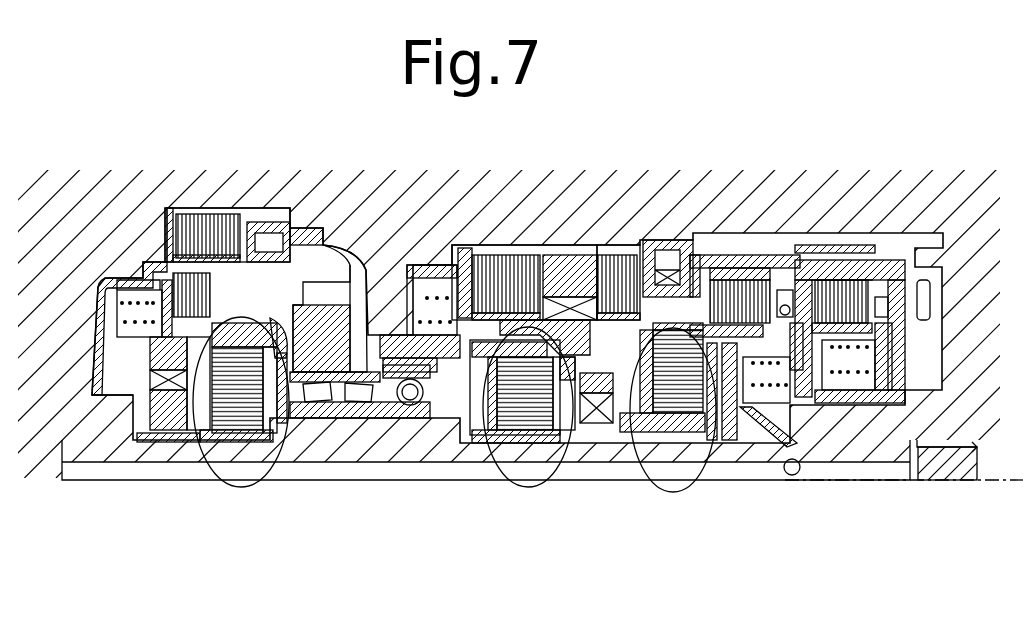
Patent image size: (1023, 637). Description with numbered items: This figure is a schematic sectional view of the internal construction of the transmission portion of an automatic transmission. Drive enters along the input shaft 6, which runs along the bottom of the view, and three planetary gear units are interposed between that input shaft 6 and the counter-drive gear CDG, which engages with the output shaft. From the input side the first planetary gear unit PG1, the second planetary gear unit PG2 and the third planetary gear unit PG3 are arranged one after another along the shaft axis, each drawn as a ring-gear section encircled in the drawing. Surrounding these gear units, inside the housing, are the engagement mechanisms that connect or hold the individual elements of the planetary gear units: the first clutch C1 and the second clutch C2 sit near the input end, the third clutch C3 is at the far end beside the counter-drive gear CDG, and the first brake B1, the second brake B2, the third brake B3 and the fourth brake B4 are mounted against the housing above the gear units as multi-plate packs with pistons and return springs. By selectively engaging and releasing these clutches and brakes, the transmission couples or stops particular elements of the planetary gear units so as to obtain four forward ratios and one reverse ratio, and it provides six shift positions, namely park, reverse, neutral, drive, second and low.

The input shaft 6 is at (913, 453).
The third clutch C3 is at (158, 253).
The fourth brake B4 is at (200, 258).
The counter-drive gear CDG is at (345, 285).
The third brake B3 is at (478, 243).
The second brake B2 is at (617, 243).
The first clutch C1 is at (723, 270).
The first brake B1 is at (817, 262).
The second clutch C2 is at (857, 272).
The third planetary gear unit PG3 is at (243, 487).
The second planetary gear unit PG2 is at (528, 487).
The first planetary gear unit PG1 is at (675, 492).